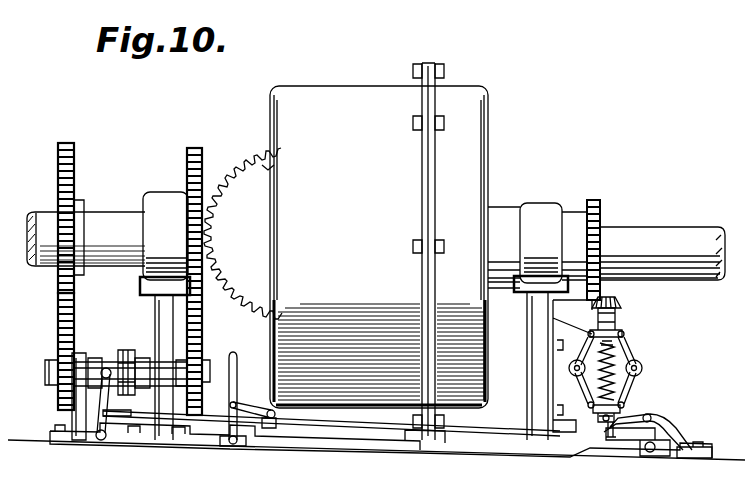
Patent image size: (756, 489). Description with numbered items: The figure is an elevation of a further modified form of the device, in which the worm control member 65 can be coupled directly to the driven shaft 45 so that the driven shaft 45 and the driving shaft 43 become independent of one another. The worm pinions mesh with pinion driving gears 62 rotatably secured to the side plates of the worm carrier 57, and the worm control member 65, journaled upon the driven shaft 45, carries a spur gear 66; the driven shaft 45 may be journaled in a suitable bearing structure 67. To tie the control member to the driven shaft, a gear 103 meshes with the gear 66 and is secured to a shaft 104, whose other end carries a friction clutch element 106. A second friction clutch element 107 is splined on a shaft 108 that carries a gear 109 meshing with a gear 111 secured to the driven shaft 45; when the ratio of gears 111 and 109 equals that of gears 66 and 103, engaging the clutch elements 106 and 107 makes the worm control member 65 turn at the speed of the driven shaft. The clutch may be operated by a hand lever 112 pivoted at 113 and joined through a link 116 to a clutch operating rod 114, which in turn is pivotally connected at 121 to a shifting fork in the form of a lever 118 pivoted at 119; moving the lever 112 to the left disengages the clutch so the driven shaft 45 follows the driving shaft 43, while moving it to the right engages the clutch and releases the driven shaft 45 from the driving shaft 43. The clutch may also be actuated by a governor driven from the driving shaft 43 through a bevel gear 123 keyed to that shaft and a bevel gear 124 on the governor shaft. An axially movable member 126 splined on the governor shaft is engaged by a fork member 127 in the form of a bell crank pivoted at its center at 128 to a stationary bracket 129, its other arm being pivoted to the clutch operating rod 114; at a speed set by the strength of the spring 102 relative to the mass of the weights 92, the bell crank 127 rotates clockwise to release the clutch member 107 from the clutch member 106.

The driving shaft 43 is at (688, 236).
The driven shaft 45 is at (110, 213).
The drum 57 is at (358, 86).
The pinion driving gear 62 is at (260, 165).
The worm control member 65 is at (205, 200).
The spur gear 66 is at (188, 157).
The bearing structure 67 is at (548, 203).
The weights 92 is at (640, 366).
The spring 102 is at (626, 386).
The gear 103 is at (202, 352).
The shaft 104 is at (204, 378).
The friction clutch element 106 is at (142, 358).
The friction clutch element 107 is at (122, 350).
The shaft 108 is at (45, 370).
The gear 109 is at (58, 340).
The gear 111 is at (58, 175).
The hand lever 112 is at (237, 362).
The pivot 113 is at (232, 445).
The clutch operating rod 114 is at (452, 447).
The link 116 is at (260, 410).
The lever 118 is at (82, 420).
The pivot 119 is at (100, 441).
The pivotal connection 121 is at (110, 418).
The bevel gear 123 is at (600, 204).
The bevel gear 124 is at (622, 310).
The axially movable member 126 is at (622, 403).
The fork member 127 is at (630, 441).
The pivot 128 is at (624, 344).
The stationary bracket 129 is at (698, 436).